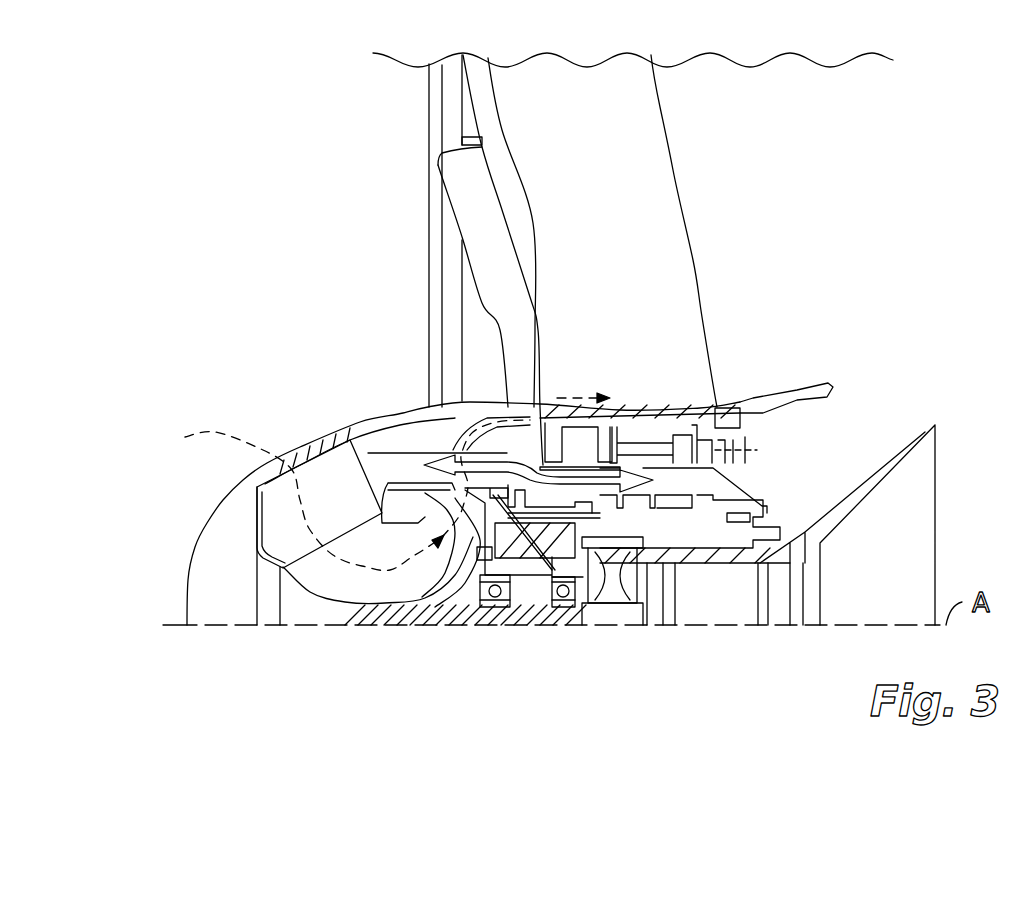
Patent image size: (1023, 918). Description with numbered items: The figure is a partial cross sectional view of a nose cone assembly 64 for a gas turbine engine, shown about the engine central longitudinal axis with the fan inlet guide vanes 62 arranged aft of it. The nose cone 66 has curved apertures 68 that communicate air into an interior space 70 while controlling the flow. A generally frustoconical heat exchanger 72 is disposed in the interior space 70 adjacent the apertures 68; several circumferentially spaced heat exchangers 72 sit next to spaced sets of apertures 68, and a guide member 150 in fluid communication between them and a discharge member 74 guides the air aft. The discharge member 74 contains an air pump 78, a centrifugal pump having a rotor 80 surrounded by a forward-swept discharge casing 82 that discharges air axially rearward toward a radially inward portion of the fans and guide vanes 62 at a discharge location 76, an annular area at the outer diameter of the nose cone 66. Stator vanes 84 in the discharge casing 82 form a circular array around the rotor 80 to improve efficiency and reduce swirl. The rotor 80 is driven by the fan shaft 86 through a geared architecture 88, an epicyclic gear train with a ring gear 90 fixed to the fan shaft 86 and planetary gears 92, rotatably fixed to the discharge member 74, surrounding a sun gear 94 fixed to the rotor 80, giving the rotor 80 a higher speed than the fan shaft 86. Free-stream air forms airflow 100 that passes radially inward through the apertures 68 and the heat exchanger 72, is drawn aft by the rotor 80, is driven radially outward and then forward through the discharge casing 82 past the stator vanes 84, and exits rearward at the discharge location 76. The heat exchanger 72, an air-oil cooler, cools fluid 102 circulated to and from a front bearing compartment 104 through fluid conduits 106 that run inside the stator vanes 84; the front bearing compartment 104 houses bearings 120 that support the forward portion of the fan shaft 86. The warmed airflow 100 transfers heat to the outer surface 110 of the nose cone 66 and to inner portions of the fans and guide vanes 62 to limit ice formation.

The fan inlet guide vane 62 is at (580, 310).
The nose cone assembly 64 is at (225, 643).
The nose cone 66 is at (187, 567).
The apertures 68 is at (328, 433).
The interior space 70 is at (290, 600).
The heat exchanger 72 is at (287, 518).
The discharge member 74 is at (458, 421).
The discharge location 76 is at (522, 407).
The air pump 78 is at (467, 631).
The pump rotor 80 is at (445, 610).
The discharge casing 82 is at (498, 407).
The stator vanes 84 is at (453, 448).
The fan shaft 86 is at (893, 470).
The geared architecture 88 is at (617, 632).
The ring gear 90 is at (617, 552).
The planetary gears 92 is at (605, 580).
The sun gear 94 is at (600, 603).
The airflow 100 is at (210, 433).
The fluid 102 is at (452, 480).
The front bearing compartment 104 is at (638, 467).
The fluid conduits 106 is at (532, 400).
The outer surface 110 is at (475, 407).
The bearings 120 is at (648, 530).
The guide member 150 is at (322, 575).